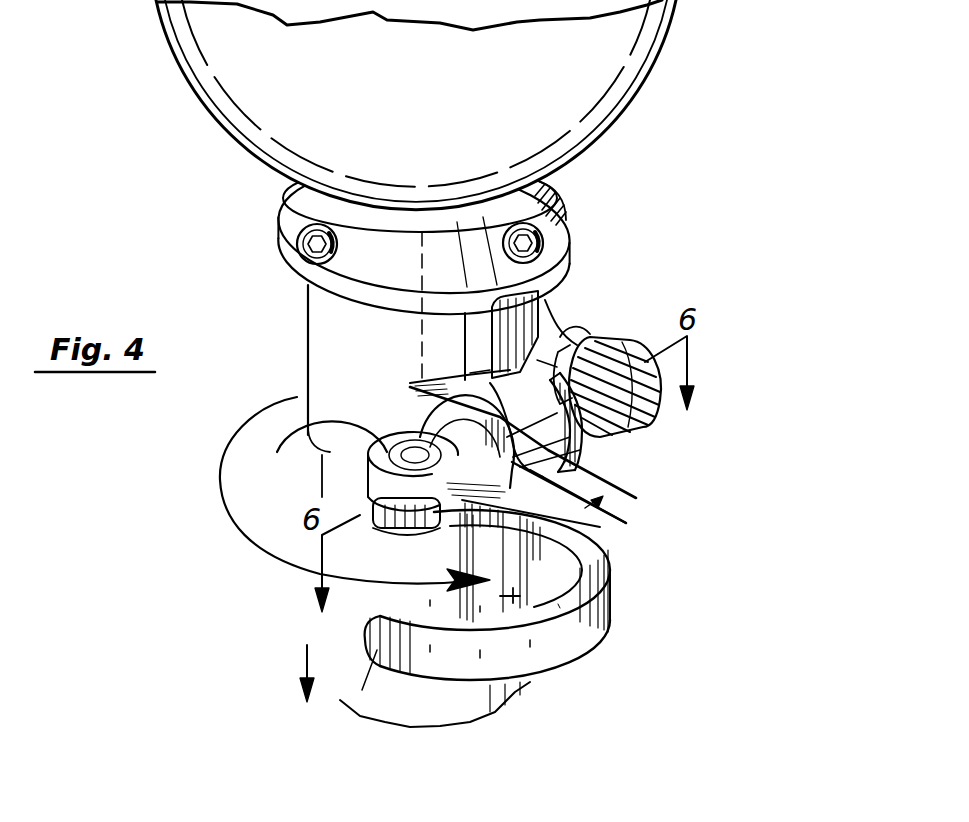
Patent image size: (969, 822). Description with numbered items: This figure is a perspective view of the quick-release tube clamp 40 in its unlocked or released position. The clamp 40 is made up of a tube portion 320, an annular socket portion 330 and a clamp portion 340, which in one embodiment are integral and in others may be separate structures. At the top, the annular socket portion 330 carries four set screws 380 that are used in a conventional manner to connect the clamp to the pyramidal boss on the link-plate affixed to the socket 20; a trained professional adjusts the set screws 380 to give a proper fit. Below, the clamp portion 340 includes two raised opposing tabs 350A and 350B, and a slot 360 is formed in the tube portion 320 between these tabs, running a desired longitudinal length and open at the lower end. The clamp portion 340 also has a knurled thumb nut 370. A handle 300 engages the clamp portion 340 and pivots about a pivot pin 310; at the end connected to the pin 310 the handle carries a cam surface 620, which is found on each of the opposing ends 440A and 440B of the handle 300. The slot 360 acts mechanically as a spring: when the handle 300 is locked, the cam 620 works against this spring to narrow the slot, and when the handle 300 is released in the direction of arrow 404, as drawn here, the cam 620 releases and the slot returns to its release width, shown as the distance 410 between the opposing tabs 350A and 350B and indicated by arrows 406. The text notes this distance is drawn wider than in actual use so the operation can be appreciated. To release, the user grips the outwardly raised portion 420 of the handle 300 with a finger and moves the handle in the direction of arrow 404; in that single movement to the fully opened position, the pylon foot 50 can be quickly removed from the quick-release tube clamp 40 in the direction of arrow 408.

The socket 20 is at (662, 95).
The quick-release tube clamp 40 is at (172, 484).
The pylon foot 50 is at (558, 604).
The handle 300 is at (542, 652).
The pivot pin 310 is at (413, 455).
The tube portion 320 is at (541, 294).
The annular socket portion 330 is at (553, 183).
The clamp portion 340 is at (568, 330).
The raised opposing tab 350A is at (490, 380).
The raised opposing tab 350B is at (575, 452).
The slot 360 is at (566, 350).
The knurled thumb nut 370 is at (650, 423).
The set screws 380 is at (297, 239).
The arrow 404 is at (264, 552).
The arrows 406 is at (648, 484).
The arrow 408 is at (288, 640).
The distance 410 is at (650, 506).
The outwardly raised portion 420 is at (362, 690).
The opposing end of the handle 440A is at (388, 535).
The opposing end of the handle 440B is at (322, 497).
The cam surface 620 is at (316, 445).